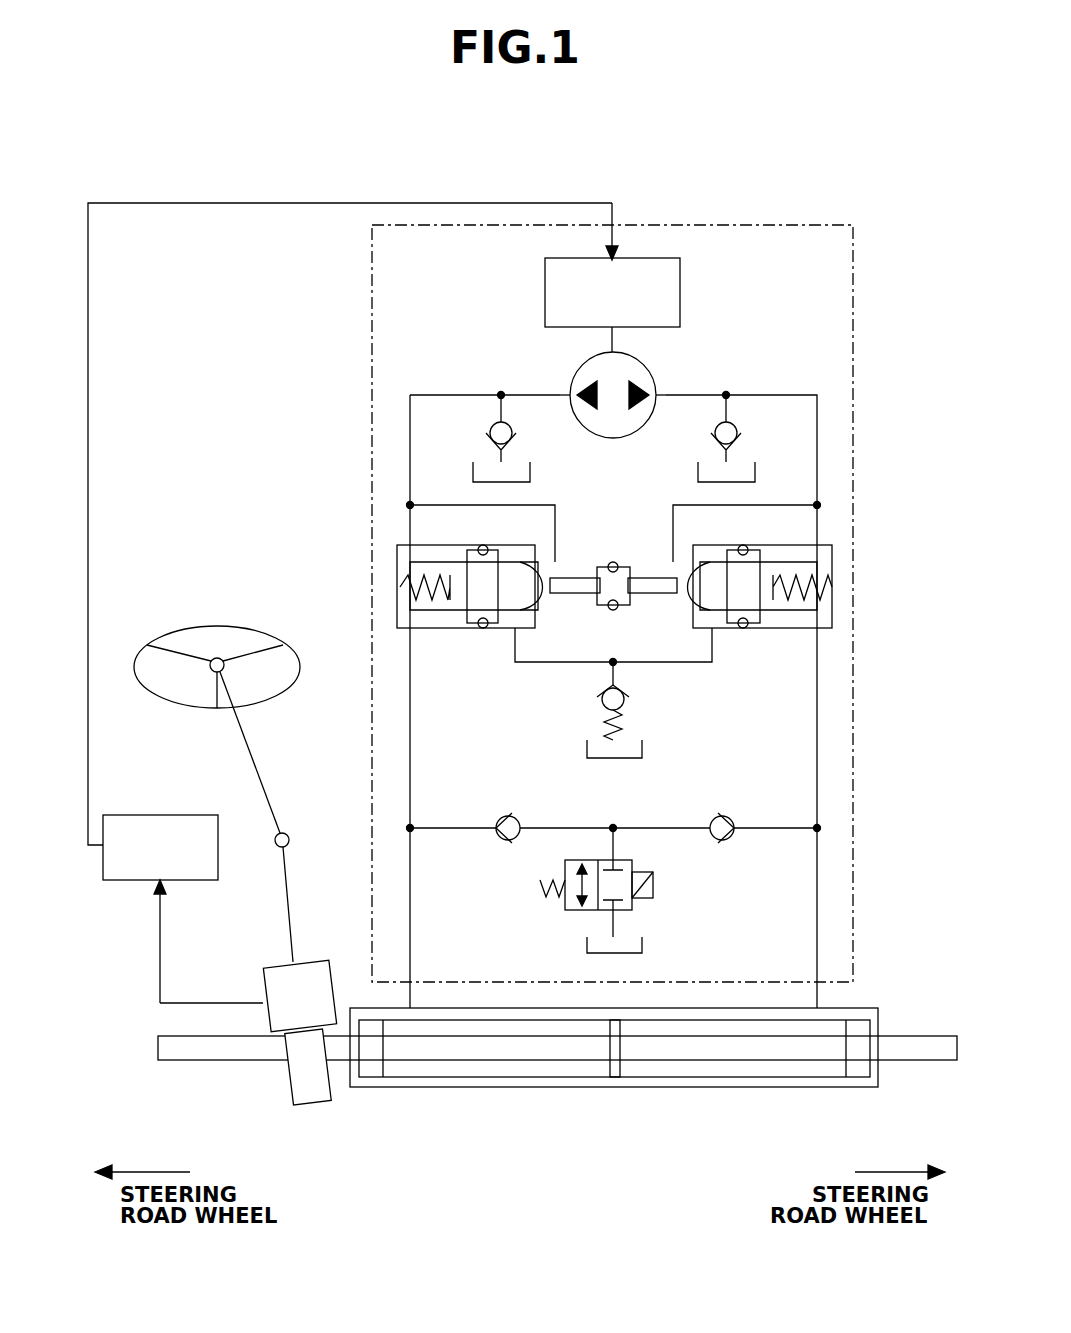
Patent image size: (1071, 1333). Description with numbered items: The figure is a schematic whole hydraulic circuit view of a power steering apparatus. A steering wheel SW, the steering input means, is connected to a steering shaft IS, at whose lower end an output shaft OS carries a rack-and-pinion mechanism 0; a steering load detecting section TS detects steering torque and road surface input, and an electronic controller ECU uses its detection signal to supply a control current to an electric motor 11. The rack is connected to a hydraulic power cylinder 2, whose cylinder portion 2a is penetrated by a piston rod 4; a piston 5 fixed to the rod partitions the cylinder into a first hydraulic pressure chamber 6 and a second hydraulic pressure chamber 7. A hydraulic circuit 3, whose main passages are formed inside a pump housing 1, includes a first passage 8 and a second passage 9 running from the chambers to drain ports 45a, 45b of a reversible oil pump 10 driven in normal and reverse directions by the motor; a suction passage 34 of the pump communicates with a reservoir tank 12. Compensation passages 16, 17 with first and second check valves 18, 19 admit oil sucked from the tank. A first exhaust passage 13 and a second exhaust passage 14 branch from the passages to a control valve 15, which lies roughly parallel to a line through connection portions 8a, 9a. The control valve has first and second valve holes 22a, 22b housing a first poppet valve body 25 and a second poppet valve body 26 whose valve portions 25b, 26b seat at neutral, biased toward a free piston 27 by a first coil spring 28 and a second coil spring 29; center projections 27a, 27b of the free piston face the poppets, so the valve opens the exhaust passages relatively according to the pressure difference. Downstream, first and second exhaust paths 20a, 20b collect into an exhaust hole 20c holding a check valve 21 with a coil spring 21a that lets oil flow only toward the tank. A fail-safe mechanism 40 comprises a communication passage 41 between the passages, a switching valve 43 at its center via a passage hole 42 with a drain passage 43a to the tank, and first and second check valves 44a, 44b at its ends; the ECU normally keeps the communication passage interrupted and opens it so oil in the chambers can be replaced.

The pump housing 1 is at (862, 303).
The hydraulic power cylinder 2 is at (838, 1095).
The cylinder portion 2a is at (750, 1082).
The hydraulic circuit 3 is at (835, 744).
The piston rod 4 is at (440, 1050).
The piston 5 is at (615, 1070).
The first hydraulic pressure chamber 6 is at (677, 1068).
The second hydraulic pressure chamber 7 is at (512, 1068).
The first passage 8 is at (817, 445).
The connection portion 8a is at (700, 393).
The second passage 9 is at (410, 440).
The connection portion 9a is at (530, 393).
The reversible oil pump 10 is at (648, 372).
The electric motor 11 is at (680, 290).
The reservoir tank 12 is at (472, 470).
The first exhaust passage 13 is at (817, 505).
The second exhaust passage 14 is at (410, 505).
The control valve 15 is at (621, 590).
The compensation passage 16 is at (729, 410).
The compensation passage 17 is at (499, 410).
The first check valve 18 is at (738, 433).
The second check valve 19 is at (489, 433).
The first exhaust path 20a is at (714, 667).
The second exhaust path 20b is at (512, 667).
The exhaust hole 20c is at (607, 683).
The check valve 21 is at (626, 700).
The coil spring 21a is at (630, 730).
The first valve hole 22a is at (660, 607).
The second valve hole 22b is at (410, 622).
The first poppet valve body 25 is at (718, 607).
The valve portion 25b is at (690, 583).
The second poppet valve body 26 is at (510, 605).
The valve portion 26b is at (538, 580).
The free piston 27 is at (603, 607).
The center projection 27a is at (657, 583).
The center projection 27b is at (565, 585).
The first coil spring 28 is at (833, 587).
The second coil spring 29 is at (397, 587).
The suction passage 34 is at (612, 337).
The fail-safe mechanism 40 is at (622, 883).
The communication passage 41 is at (558, 826).
The passage hole 42 is at (615, 840).
The switching valve 43 is at (563, 874).
The drain passage 43a is at (615, 920).
The first check valve 44a is at (732, 815).
The second check valve 44b is at (498, 815).
The drain port 45a is at (656, 402).
The drain port 45b is at (572, 402).
The steering wheel SW is at (205, 626).
The steering shaft IS is at (248, 755).
The output shaft OS is at (292, 885).
The steering load detecting section TS is at (262, 957).
The electronic controller ECU is at (160, 847).
The rack-and-pinion mechanism 0 is at (300, 1092).